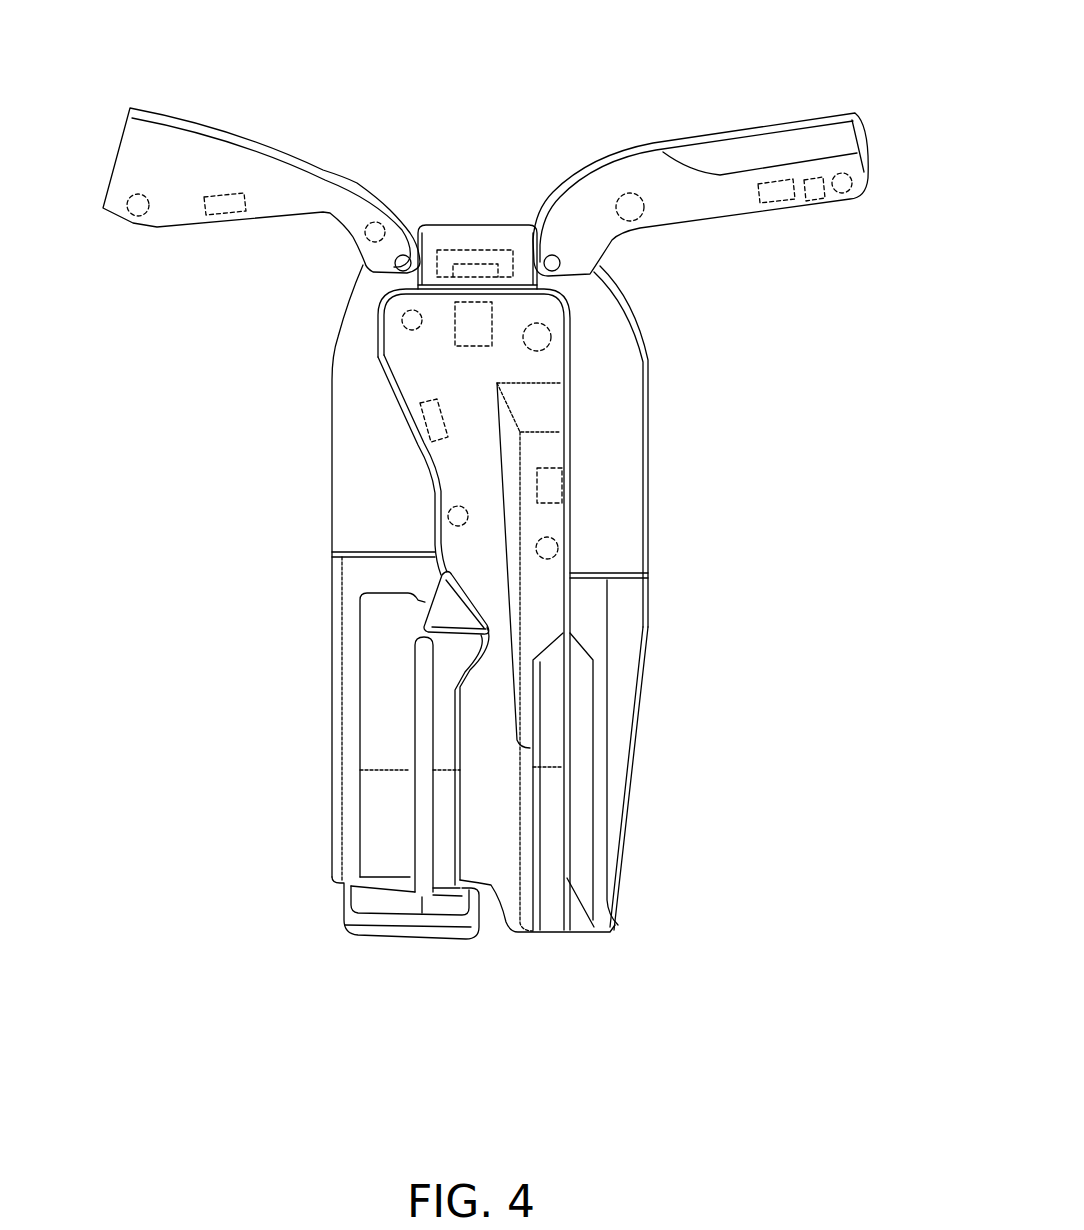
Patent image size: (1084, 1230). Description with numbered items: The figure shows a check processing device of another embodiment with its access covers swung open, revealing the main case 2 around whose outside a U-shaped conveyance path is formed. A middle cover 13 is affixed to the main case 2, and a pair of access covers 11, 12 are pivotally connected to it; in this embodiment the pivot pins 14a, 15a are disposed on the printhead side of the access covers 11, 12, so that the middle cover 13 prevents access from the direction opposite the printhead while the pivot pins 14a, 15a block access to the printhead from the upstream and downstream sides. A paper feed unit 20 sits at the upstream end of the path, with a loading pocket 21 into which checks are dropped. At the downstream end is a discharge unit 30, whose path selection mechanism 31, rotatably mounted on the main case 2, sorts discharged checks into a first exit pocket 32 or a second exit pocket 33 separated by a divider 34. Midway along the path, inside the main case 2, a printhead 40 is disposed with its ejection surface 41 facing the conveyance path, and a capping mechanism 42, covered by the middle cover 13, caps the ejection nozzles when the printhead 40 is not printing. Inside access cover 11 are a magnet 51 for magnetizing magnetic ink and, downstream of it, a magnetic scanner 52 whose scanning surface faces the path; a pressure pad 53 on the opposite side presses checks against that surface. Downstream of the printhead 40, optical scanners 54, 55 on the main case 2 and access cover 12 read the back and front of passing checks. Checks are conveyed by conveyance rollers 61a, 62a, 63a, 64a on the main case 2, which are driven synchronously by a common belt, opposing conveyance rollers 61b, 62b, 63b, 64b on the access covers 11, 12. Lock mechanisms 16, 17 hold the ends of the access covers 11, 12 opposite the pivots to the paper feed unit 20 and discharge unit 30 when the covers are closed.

The main case 2 is at (408, 376).
The access cover 11 is at (697, 155).
The access cover 12 is at (269, 176).
The middle cover 13 is at (460, 236).
The pivot pin 14a is at (547, 250).
The pivot pin 15a is at (400, 257).
The lock mechanism 16 is at (658, 641).
The lock mechanism 17 is at (328, 612).
The paper feed unit 20 is at (608, 832).
The loading pocket 21 is at (560, 720).
The discharge unit 30 is at (345, 689).
The path selection mechanism 31 is at (447, 620).
The first exit pocket 32 is at (385, 755).
The second exit pocket 33 is at (425, 715).
The divider 34 is at (420, 818).
The printhead 40 is at (450, 335).
The ejection surface 41 is at (505, 300).
The capping mechanism 42 is at (504, 250).
The magnet 51 is at (813, 180).
The magnetic scanner 52 is at (765, 198).
The pressure pad 53 is at (562, 485).
The optical scanner 54 is at (420, 437).
The optical scanner 55 is at (220, 222).
The conveyance roller 61a is at (558, 549).
The conveyance roller 61b is at (847, 172).
The conveyance roller 62a is at (550, 342).
The conveyance roller 62b is at (630, 193).
The conveyance roller 63a is at (400, 325).
The conveyance roller 63b is at (367, 235).
The conveyance roller 64a is at (447, 513).
The conveyance roller 64b is at (140, 215).